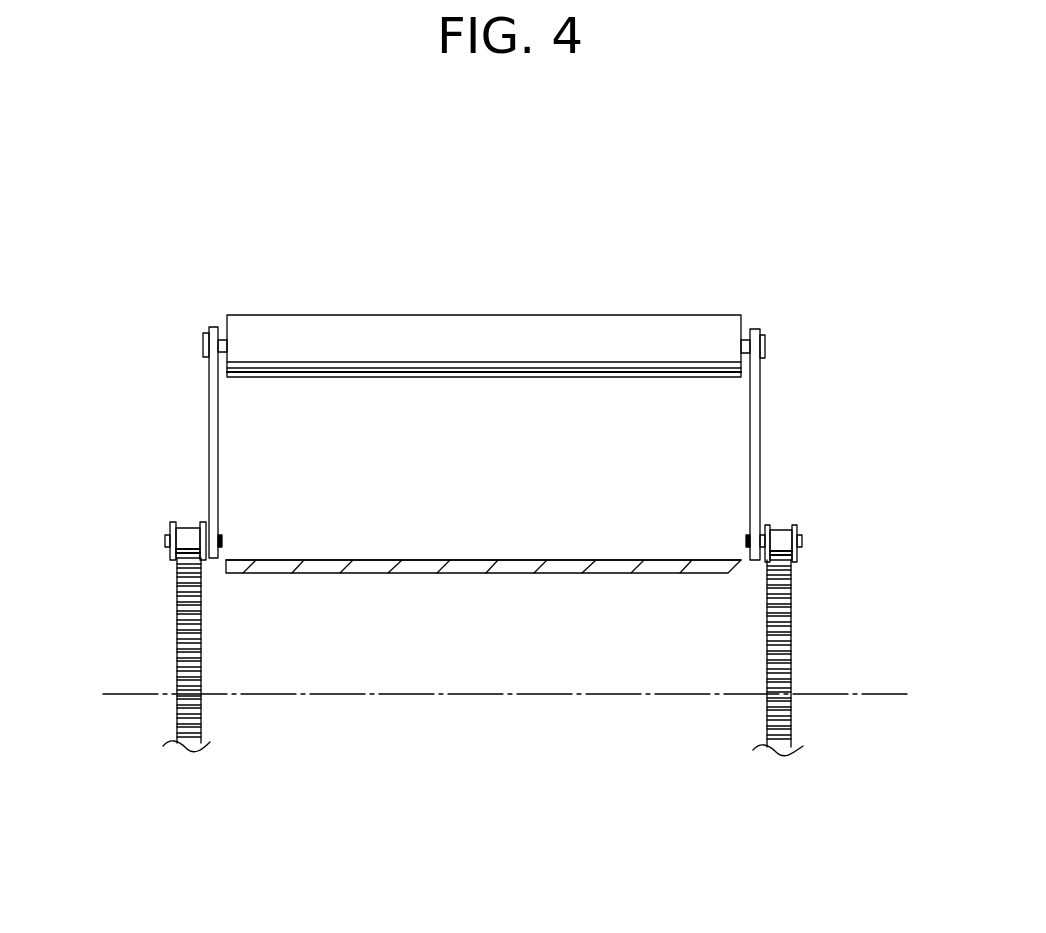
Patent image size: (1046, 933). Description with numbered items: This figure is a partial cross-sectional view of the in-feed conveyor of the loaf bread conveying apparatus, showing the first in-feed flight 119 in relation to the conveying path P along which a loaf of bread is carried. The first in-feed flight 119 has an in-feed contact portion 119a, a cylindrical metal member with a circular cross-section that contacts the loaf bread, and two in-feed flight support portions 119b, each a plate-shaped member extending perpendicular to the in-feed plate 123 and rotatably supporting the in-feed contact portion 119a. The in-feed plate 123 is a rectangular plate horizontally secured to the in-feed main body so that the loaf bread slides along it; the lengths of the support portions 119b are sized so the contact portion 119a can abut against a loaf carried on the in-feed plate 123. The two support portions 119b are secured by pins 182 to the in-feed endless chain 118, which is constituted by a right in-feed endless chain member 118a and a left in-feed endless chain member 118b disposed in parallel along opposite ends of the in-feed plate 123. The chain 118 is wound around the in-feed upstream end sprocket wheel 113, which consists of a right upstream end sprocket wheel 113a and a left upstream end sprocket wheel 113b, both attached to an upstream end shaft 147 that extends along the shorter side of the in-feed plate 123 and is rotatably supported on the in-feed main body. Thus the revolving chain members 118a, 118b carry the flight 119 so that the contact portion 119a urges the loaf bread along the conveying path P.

The first in-feed flight 119 is at (649, 244).
The in-feed contact portion 119a is at (493, 335).
The in-feed flight support portions 119b is at (210, 397).
The pins 182 is at (222, 541).
The in-feed endless chain 118 is at (490, 478).
The right in-feed endless chain member 118a is at (170, 528).
The left in-feed endless chain member 118b is at (798, 532).
The in-feed plate 123 is at (530, 567).
The conveying path P is at (432, 555).
The in-feed upstream end sprocket wheel 113 is at (542, 641).
The right upstream end sprocket wheel 113a is at (202, 657).
The left upstream end sprocket wheel 113b is at (767, 657).
The upstream end shaft 147 is at (857, 700).